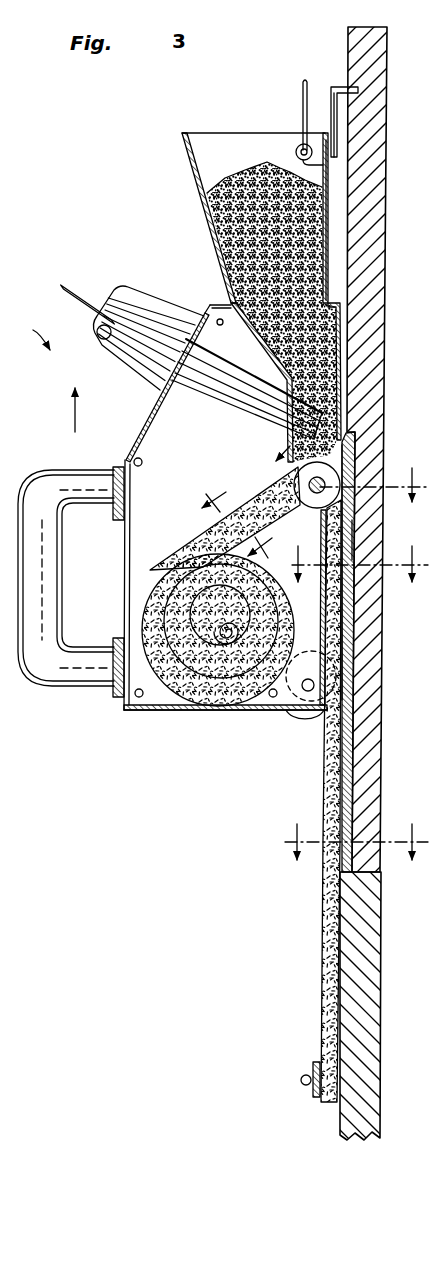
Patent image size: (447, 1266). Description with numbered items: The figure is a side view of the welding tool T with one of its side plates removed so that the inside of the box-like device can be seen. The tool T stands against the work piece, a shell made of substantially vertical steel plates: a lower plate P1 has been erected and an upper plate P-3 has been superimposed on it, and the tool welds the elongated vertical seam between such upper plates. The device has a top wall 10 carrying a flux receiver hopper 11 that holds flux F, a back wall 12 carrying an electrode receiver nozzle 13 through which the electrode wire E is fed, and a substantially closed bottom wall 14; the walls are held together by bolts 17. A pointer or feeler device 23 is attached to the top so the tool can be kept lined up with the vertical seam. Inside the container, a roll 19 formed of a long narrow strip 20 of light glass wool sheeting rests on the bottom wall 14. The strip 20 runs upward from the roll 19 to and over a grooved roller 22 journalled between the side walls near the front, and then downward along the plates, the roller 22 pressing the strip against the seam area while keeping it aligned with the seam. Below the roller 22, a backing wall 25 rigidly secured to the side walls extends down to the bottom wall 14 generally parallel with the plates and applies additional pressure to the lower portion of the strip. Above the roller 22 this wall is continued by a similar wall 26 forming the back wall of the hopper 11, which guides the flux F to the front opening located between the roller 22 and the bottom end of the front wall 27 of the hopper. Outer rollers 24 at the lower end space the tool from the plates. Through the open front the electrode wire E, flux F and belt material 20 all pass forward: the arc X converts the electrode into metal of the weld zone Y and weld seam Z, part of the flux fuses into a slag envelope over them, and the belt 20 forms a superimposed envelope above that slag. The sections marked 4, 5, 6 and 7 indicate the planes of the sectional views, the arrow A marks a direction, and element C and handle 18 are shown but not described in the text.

The clip C is at (303, 97).
The pointer or feeler device 23 is at (331, 118).
The flux F is at (243, 170).
The plate P-3 is at (378, 182).
The flux receiver hopper 11 is at (203, 212).
The front wall of the flux hopper 27 is at (328, 246).
The electrode wire E is at (88, 302).
The top wall 10 is at (212, 303).
The wall 26 is at (252, 328).
The welding tool T is at (33, 328).
The electrode receiver nozzle 13 is at (132, 366).
The direction arrow A is at (62, 410).
The back wall 12 is at (153, 404).
The bolts 17 is at (135, 457).
The arc X is at (357, 438).
The weld zone Y is at (346, 465).
The weld seam Z is at (350, 526).
The section line 5- 5 is at (340, 488).
The roller 22 is at (310, 503).
The section line 4- 4 is at (240, 514).
The strip 20 is at (203, 553).
The section line 6- 6 is at (360, 575).
The backing wall 25 is at (330, 650).
The handle 18 is at (44, 682).
The bottom wall 14 is at (162, 712).
The roll 19 is at (256, 710).
The outer rollers 24 is at (310, 720).
The section line 7- 7 is at (356, 855).
The lower plate P1 is at (368, 957).